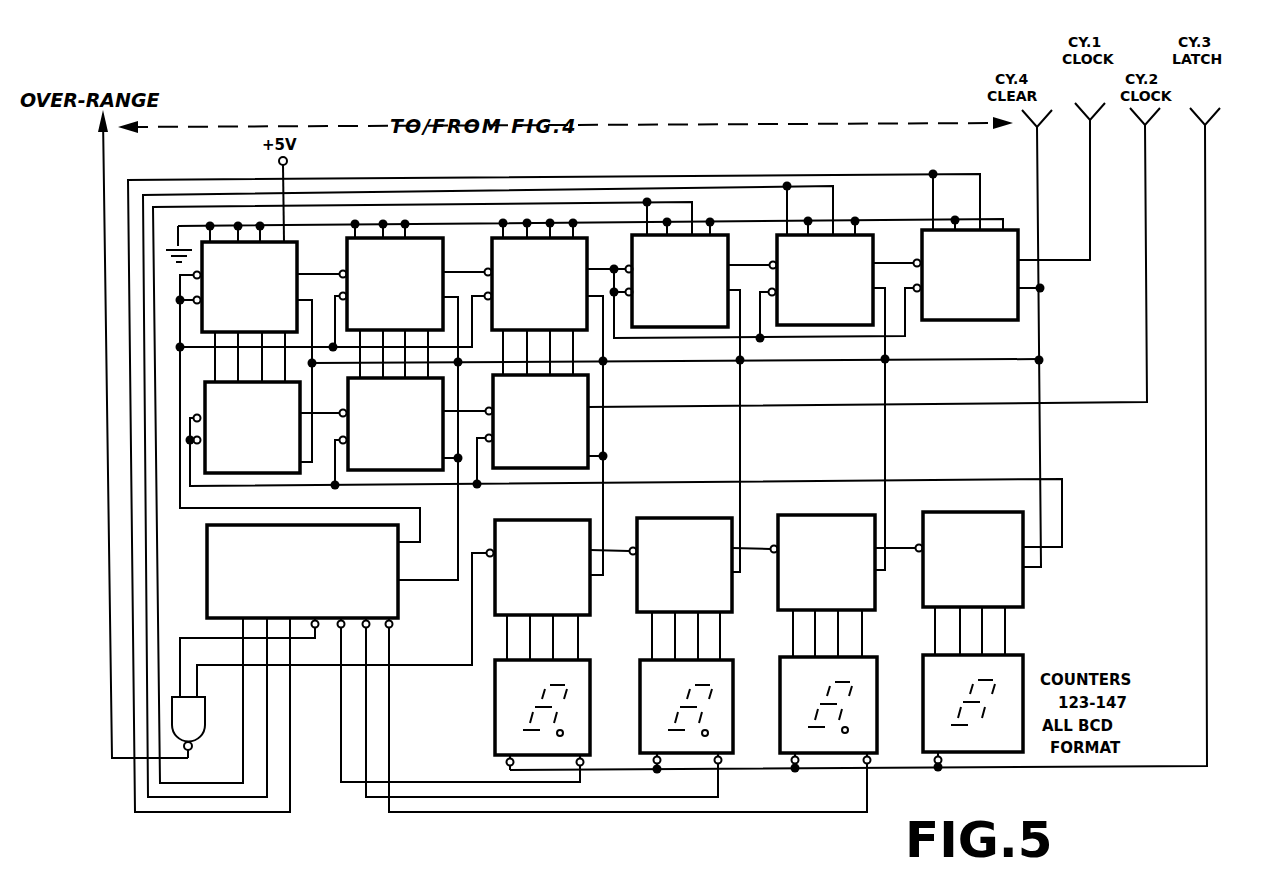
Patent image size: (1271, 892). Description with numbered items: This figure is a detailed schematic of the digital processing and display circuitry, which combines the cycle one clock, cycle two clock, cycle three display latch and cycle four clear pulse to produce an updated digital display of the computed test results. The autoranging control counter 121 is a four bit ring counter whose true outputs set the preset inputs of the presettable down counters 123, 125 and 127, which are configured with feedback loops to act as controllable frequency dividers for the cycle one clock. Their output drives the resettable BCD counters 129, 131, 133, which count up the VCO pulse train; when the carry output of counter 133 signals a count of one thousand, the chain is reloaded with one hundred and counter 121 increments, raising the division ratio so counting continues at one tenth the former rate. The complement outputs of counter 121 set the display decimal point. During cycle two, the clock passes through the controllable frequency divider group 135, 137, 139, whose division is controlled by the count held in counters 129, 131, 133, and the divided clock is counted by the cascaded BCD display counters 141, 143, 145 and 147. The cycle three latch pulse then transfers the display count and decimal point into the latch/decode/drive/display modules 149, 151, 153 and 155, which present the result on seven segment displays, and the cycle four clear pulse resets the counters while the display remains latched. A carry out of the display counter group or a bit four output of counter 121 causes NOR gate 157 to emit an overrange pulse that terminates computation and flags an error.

The autoranging control counter 121 is at (207, 574).
The presettable down counter 123 is at (1021, 210).
The presettable down counter 125 is at (876, 238).
The presettable down counter 127 is at (762, 208).
The resettable BCD counter 129 is at (590, 238).
The resettable BCD counter 131 is at (425, 238).
The resettable BCD counter 133 is at (289, 238).
The controllable frequency divider 135 is at (590, 436).
The controllable frequency divider 137 is at (420, 471).
The controllable frequency divider 139 is at (280, 474).
The cascaded BCD counter 141 is at (978, 512).
The cascaded BCD counter 143 is at (840, 515).
The cascaded BCD counter 145 is at (690, 518).
The cascaded BCD counter 147 is at (557, 520).
The latch/decode/drive/display module 149 is at (922, 675).
The latch/decode/drive/display module 151 is at (779, 677).
The latch/decode/drive/display module 153 is at (638, 681).
The latch/decode/drive/display module 155 is at (493, 714).
The NOR gate 157 is at (205, 727).